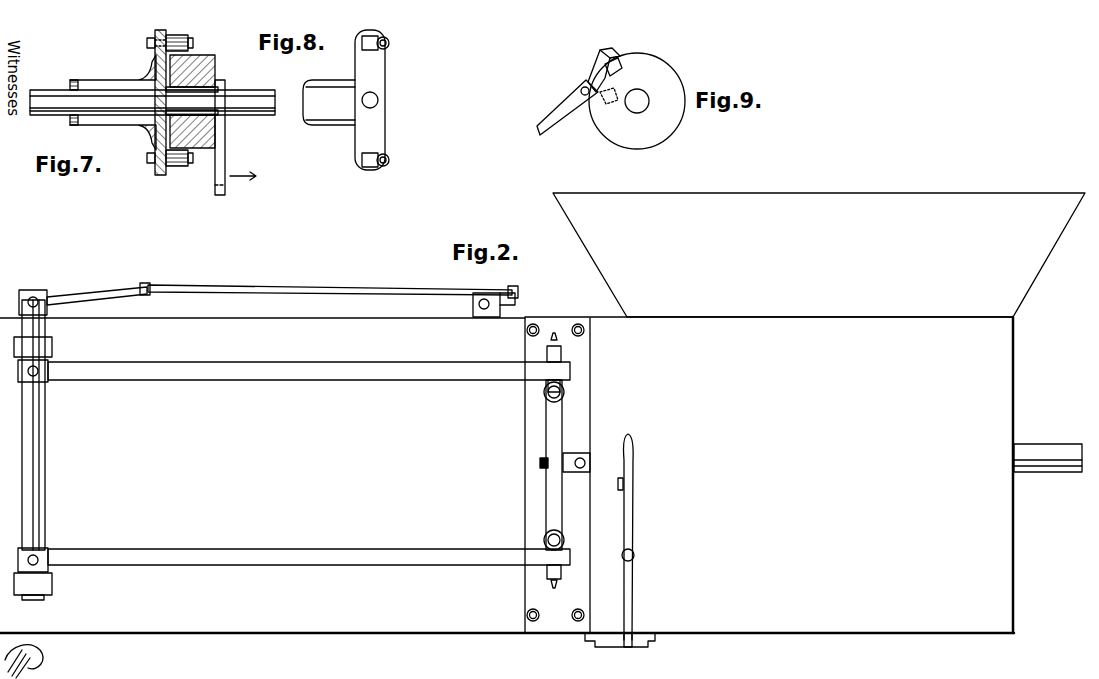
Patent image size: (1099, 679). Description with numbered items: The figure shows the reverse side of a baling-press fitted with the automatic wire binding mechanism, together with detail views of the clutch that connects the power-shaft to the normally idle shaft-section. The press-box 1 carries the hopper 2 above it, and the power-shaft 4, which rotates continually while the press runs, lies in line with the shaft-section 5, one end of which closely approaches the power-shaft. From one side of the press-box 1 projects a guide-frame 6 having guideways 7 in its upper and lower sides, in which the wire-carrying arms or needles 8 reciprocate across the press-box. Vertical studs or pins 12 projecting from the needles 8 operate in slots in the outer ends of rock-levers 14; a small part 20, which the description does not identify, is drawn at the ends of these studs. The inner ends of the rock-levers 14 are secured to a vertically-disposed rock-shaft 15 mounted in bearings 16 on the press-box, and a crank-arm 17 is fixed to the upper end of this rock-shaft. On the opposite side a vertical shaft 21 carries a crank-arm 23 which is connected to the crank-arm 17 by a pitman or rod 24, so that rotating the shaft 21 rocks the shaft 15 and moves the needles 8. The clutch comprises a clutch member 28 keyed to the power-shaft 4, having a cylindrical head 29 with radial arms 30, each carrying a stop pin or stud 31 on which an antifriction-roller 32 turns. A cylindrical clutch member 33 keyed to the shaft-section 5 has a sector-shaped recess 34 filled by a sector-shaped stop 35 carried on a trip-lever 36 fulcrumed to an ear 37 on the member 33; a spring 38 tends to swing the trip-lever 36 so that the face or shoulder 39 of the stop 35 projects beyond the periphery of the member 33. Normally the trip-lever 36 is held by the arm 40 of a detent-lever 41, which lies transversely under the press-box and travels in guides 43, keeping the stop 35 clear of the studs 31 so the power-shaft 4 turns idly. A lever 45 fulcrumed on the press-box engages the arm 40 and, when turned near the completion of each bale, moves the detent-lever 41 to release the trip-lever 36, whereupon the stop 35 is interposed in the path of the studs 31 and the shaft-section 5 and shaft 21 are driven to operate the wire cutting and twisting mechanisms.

In FIG. 2, the press-box 1 is at (507, 475).
In FIG. 2, the hopper 2 is at (805, 413).
In FIG. 7, the power-shaft 4 is at (45, 90).
In FIG. 7, the shaft-section 5 is at (257, 77).
In FIG. 2, the shaft-section 5 is at (557, 475).
In FIG. 2, the guide-frame 6 is at (546, 500).
In FIG. 2, the guideways 7 is at (565, 398).
In FIG. 2, the wire-carrying arms or needles 8 is at (545, 400).
In FIG. 2, the vertical studs or pins 12 is at (562, 352).
In FIG. 2, the rock-levers 14 is at (305, 381).
In FIG. 2, the rock-shaft 15 is at (44, 500).
In FIG. 2, the bearings 16 is at (53, 348).
In FIG. 2, the crank-arm 17 is at (95, 292).
In FIG. 2, the pin 20 is at (560, 460).
In FIG. 2, the vertical shaft 21 is at (502, 313).
In FIG. 2, the crank-arm 23 is at (473, 298).
In FIG. 2, the pitman or rod 24 is at (332, 284).
In FIG. 7, the clutch member 28 is at (120, 80).
In FIG. 8, the clutch member 28 is at (329, 102).
In FIG. 7, the cylindrical head 29 is at (85, 125).
In FIG. 8, the cylindrical head 29 is at (308, 135).
In FIG. 7, the radial arms 30 is at (158, 30).
In FIG. 8, the radial arms 30 is at (378, 120).
In FIG. 7, the stop pin or stud 31 is at (194, 44).
In FIG. 8, the stop pin or stud 31 is at (391, 43).
In FIG. 7, the antifriction-roller 32 is at (188, 37).
In FIG. 8, the antifriction-roller 32 is at (380, 55).
In FIG. 7, the clutch member 33 is at (216, 60).
In FIG. 9, the clutch member 33 is at (676, 116).
In FIG. 9, the sector-shaped recess 34 is at (622, 60).
In FIG. 9, the sector-shaped stop 35 is at (596, 62).
In FIG. 9, the trip-lever 36 is at (552, 114).
In FIG. 9, the ear 37 is at (580, 88).
In FIG. 9, the spring 38 is at (616, 88).
In FIG. 9, the face or shoulder 39 is at (607, 52).
In FIG. 7, the arm 40 is at (226, 115).
In FIG. 7, the detent-lever 41 is at (221, 196).
In FIG. 2, the detent-lever 41 is at (636, 647).
In FIG. 2, the guides 43 is at (600, 647).
In FIG. 2, the lever 45 is at (633, 480).